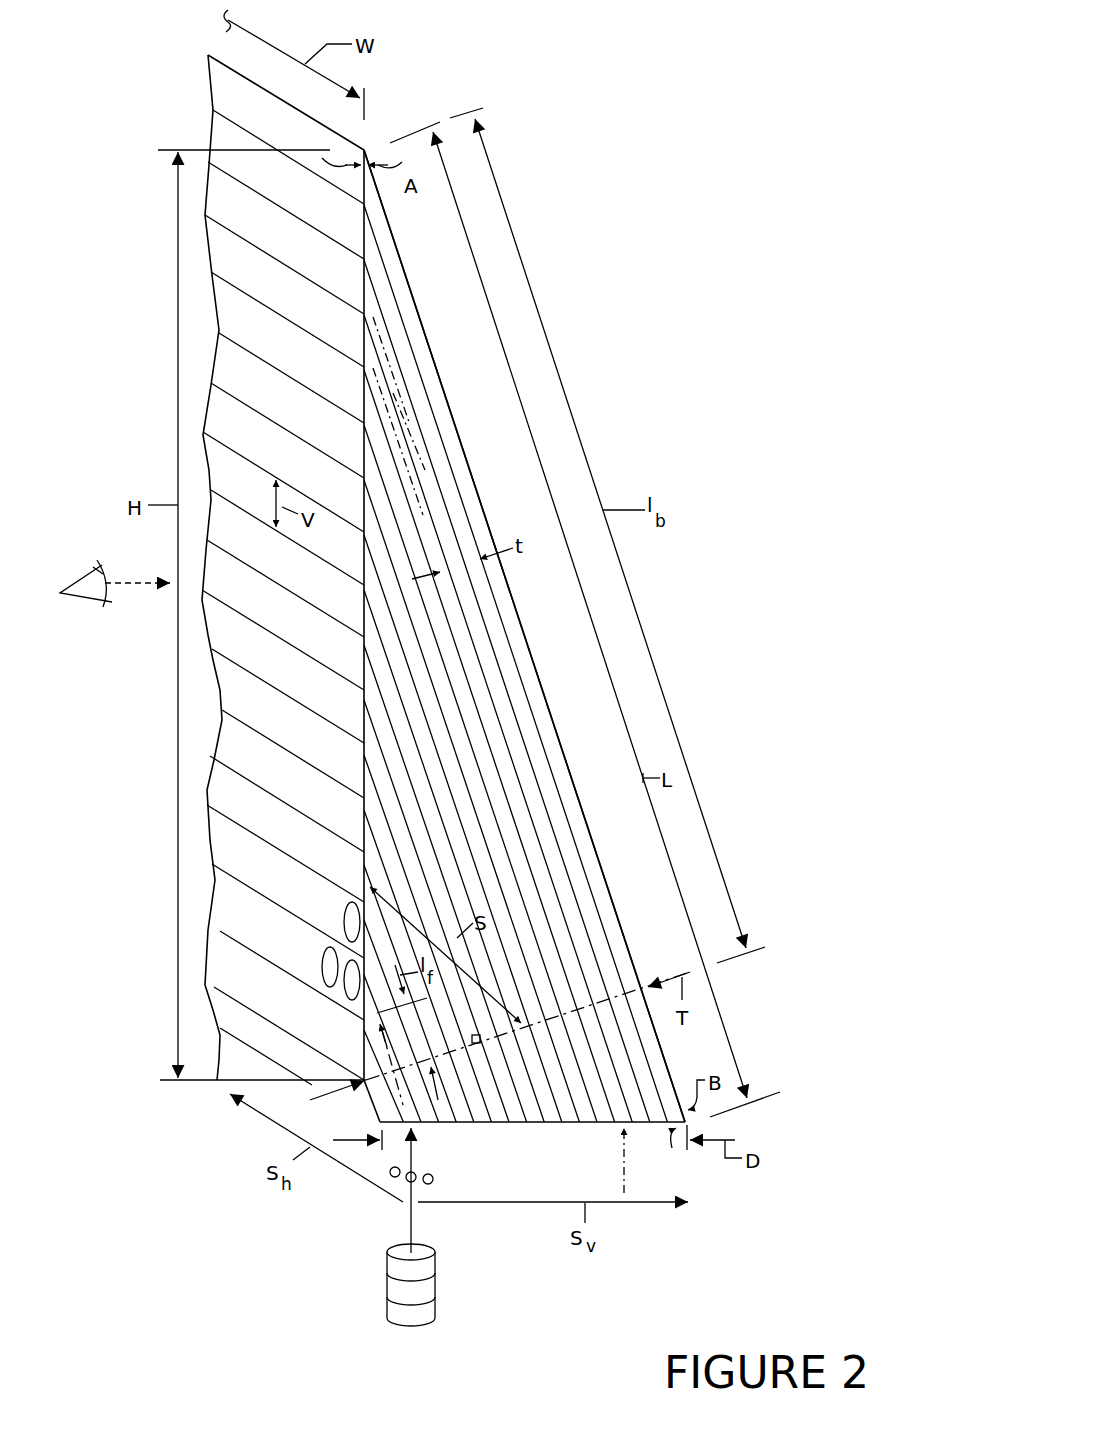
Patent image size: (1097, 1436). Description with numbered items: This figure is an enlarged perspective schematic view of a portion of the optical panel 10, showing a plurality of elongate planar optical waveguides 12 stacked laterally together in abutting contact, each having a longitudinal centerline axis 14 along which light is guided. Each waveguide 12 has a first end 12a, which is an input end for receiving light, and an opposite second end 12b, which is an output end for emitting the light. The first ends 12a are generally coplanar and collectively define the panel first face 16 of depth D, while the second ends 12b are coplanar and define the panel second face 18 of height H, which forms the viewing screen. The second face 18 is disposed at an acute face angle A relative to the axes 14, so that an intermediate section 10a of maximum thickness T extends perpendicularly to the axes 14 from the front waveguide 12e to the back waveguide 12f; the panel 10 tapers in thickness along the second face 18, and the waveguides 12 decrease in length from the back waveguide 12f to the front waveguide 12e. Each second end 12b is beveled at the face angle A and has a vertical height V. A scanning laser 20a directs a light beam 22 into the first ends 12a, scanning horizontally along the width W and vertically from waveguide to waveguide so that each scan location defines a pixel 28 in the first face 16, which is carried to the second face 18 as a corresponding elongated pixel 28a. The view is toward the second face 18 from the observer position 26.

The optical panel 10 is at (170, 285).
The intermediate section 10a is at (600, 1004).
The optical waveguides 12 is at (505, 655).
The first end 12a is at (560, 1143).
The second end 12b is at (313, 360).
The front waveguide 12e is at (366, 1047).
The back waveguide 12f is at (542, 682).
The longitudinal centerline axis 14 is at (398, 442).
The first face 16 is at (483, 1128).
The second face 18 is at (238, 800).
The scanning laser 20a is at (438, 1283).
The light beam 22 is at (413, 1226).
The observer eye 26 is at (101, 596).
The pixel 28 is at (423, 1182).
The pixels 28a is at (328, 967).